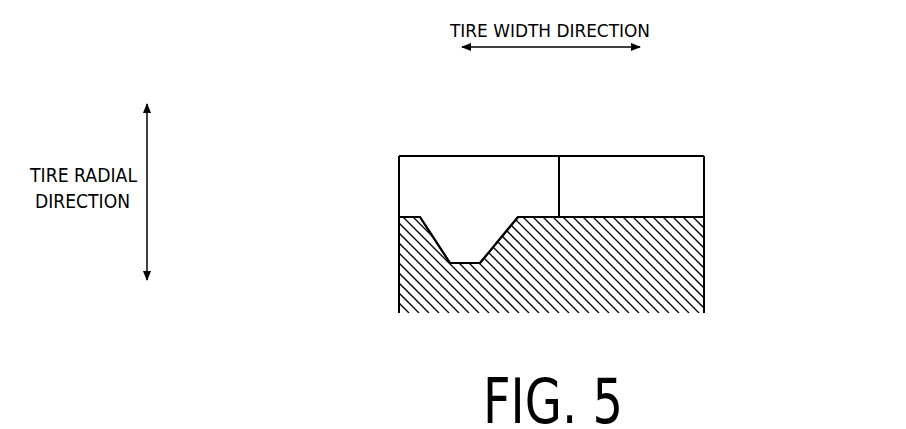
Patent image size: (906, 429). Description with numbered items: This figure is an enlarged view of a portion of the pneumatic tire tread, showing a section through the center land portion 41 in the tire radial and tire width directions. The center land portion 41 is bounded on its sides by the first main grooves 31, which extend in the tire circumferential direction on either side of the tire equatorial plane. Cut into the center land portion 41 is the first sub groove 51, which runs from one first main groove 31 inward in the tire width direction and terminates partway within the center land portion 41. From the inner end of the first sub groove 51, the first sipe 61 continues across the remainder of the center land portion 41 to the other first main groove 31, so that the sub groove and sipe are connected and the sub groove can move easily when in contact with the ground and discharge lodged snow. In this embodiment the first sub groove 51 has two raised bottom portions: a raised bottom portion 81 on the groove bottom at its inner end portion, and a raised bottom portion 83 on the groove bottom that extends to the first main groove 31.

The first main groove 31 is at (351, 287).
The center land portion 41 is at (469, 156).
The first sub groove 51 is at (412, 178).
The first sipe 61 is at (688, 182).
The raised bottom portion 81 is at (529, 215).
The raised bottom portion 83 is at (418, 215).